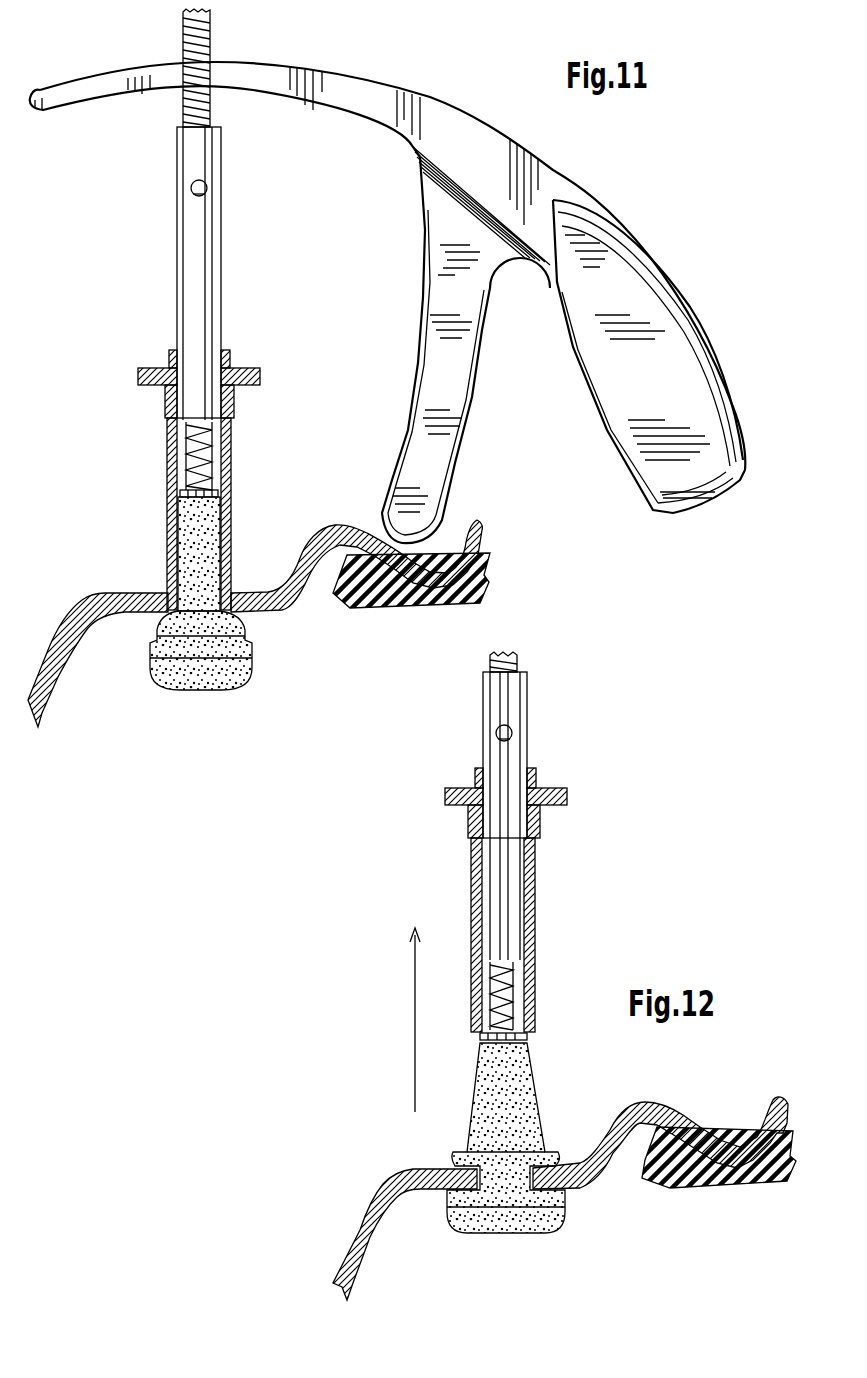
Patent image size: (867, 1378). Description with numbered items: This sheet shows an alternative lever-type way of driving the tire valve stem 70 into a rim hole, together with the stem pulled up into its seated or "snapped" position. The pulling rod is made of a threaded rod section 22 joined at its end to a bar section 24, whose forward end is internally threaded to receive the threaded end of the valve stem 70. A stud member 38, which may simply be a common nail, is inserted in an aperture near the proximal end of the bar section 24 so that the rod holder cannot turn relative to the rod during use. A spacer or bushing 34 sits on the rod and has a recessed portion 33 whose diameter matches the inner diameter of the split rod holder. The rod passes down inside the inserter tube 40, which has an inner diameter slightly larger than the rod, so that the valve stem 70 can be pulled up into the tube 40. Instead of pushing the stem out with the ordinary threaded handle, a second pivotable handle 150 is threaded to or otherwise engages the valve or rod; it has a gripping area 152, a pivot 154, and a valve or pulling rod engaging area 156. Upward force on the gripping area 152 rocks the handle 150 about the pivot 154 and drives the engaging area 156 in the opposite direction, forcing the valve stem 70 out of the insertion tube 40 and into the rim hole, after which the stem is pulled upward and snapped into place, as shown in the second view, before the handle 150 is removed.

In FIG. 11, the threaded rod section 22 is at (183, 22).
In FIG. 12, the threaded rod section 22 is at (517, 662).
In FIG. 11, the bar section 24 is at (188, 248).
In FIG. 12, the bar section 24 is at (527, 695).
In FIG. 11, the recessed portion 33 is at (170, 350).
In FIG. 12, the recessed portion 33 is at (475, 775).
In FIG. 11, the spacer or bushing 34 is at (138, 378).
In FIG. 12, the spacer or bushing 34 is at (445, 805).
In FIG. 11, the stud member 38 is at (207, 188).
In FIG. 12, the stud member 38 is at (497, 733).
In FIG. 11, the inserter tube 40 is at (232, 510).
In FIG. 12, the inserter tube 40 is at (537, 888).
In FIG. 11, the tire valve stem 70 is at (155, 675).
In FIG. 12, the tire valve stem 70 is at (538, 1222).
In FIG. 11, the pivotable handle 150 is at (613, 192).
In FIG. 11, the gripping area 152 is at (640, 307).
In FIG. 11, the pivot 154 is at (468, 396).
In FIG. 11, the valve or pulling rod engaging area 156 is at (233, 67).